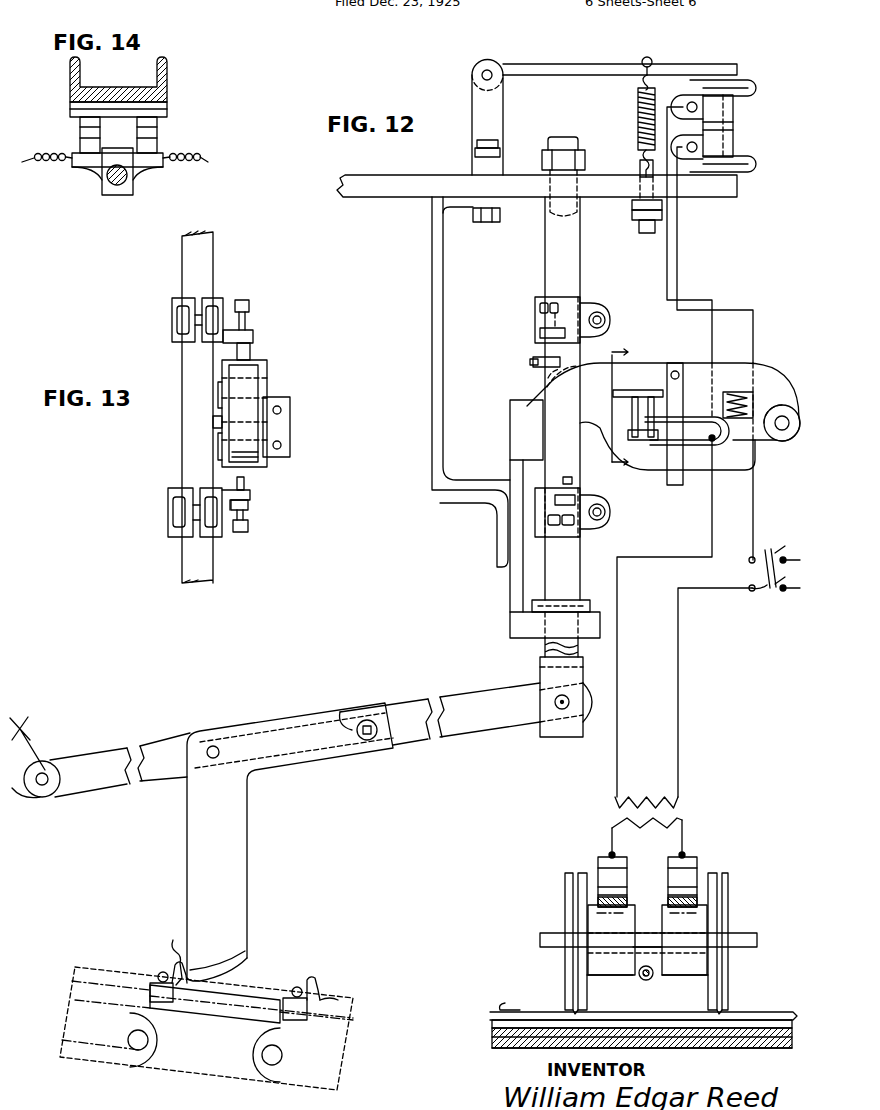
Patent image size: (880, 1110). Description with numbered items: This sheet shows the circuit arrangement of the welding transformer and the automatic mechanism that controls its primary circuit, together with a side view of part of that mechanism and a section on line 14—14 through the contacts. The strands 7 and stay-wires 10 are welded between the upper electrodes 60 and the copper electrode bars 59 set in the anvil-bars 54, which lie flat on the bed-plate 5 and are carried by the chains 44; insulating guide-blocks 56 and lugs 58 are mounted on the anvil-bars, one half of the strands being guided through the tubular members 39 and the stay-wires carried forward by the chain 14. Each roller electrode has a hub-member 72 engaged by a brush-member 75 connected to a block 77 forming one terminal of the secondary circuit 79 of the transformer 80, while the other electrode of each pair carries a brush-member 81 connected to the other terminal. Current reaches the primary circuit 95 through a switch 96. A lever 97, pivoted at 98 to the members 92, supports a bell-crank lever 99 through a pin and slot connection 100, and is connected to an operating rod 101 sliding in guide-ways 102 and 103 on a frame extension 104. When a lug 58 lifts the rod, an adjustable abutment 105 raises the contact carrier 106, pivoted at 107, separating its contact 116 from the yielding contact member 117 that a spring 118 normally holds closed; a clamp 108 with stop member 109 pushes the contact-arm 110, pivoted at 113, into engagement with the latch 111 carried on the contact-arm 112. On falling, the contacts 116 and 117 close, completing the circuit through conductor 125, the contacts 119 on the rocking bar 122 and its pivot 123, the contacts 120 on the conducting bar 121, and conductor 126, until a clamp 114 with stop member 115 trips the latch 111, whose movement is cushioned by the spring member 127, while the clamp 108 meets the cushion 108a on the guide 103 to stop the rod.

In FIG. 12, the bed-plate 5 is at (535, 1040).
In FIG. 12, the strands 7 is at (565, 998).
In FIG. 12, the stay-wires 10 is at (162, 974).
In FIG. 12, the chain 14 is at (611, 406).
In FIG. 12, the tubular members 39 is at (646, 980).
In FIG. 12, the chains 44 is at (204, 1077).
In FIG. 12, the anvil-bars 54 is at (78, 992).
In FIG. 12, the guide-blocks 56 is at (253, 983).
In FIG. 12, the lugs 58 is at (158, 949).
In FIG. 12, the electrode bars 59 is at (503, 1018).
In FIG. 12, the upper electrodes 60 is at (565, 973).
In FIG. 12, the hub-member 72 is at (613, 970).
In FIG. 12, the brush-members 75 is at (697, 900).
In FIG. 12, the block 77 is at (693, 860).
In FIG. 12, the secondary circuit 79 is at (685, 838).
In FIG. 12, the transformer 80 is at (673, 815).
In FIG. 12, the brush-member 81 is at (598, 897).
In FIG. 12, the members 92 is at (27, 732).
In FIG. 12, the primary circuit 95 is at (678, 702).
In FIG. 12, the switch 96 is at (774, 583).
In FIG. 12, the lever 97 is at (155, 752).
In FIG. 12, the pivot 98 is at (50, 758).
In FIG. 12, the bell-crank lever 99 is at (237, 853).
In FIG. 12, the pin and slot connection 100 is at (352, 712).
In FIG. 13, the operating rod 101 is at (213, 261).
In FIG. 12, the operating rod 101 is at (553, 255).
In FIG. 12, the guide-way 102 is at (550, 190).
In FIG. 12, the guide-way 103 is at (533, 625).
In FIG. 12, the extension 104 is at (370, 181).
In FIG. 12, the adjustable abutment 105 is at (560, 134).
In FIG. 12, the contact carrier 106 is at (559, 67).
In FIG. 12, the pivot 107 is at (472, 75).
In FIG. 13, the clamp 108 is at (168, 514).
In FIG. 12, the clamp 108 is at (610, 512).
In FIG. 12, the cushion 108a is at (537, 600).
In FIG. 13, the adjustable stop member 109 is at (244, 483).
In FIG. 12, the adjustable stop member 109 is at (572, 480).
In FIG. 13, the contact-arm 110 is at (238, 437).
In FIG. 12, the contact-arm 110 is at (703, 463).
In FIG. 13, the latch 111 is at (260, 383).
In FIG. 12, the latch 111 is at (587, 407).
In FIG. 14, the contact-arm 112 is at (167, 76).
In FIG. 13, the contact-arm 112 is at (263, 392).
In FIG. 12, the contact-arm 112 is at (655, 368).
In FIG. 13, the pivot 113 is at (213, 422).
In FIG. 12, the pivot 113 is at (782, 418).
In FIG. 13, the clamp 114 is at (172, 319).
In FIG. 12, the clamp 114 is at (587, 307).
In FIG. 13, the adjustable stop member 115 is at (250, 349).
In FIG. 12, the adjustable stop member 115 is at (553, 348).
In FIG. 12, the contact 116 is at (760, 119).
In FIG. 12, the contact member 117 is at (723, 131).
In FIG. 12, the spring 118 is at (638, 100).
In FIG. 14, the contacts 119 is at (80, 142).
In FIG. 12, the contacts 119 is at (634, 420).
In FIG. 14, the contacts 120 is at (80, 127).
In FIG. 12, the contacts 120 is at (639, 408).
In FIG. 14, the conducting bar 121 is at (167, 112).
In FIG. 12, the conducting bar 121 is at (643, 392).
In FIG. 14, the bar 122 is at (90, 166).
In FIG. 14, the pivot 123 is at (133, 178).
In FIG. 12, the conductor 125 is at (752, 493).
In FIG. 12, the conductor 126 is at (614, 597).
In FIG. 12, the spring member 127 is at (553, 381).